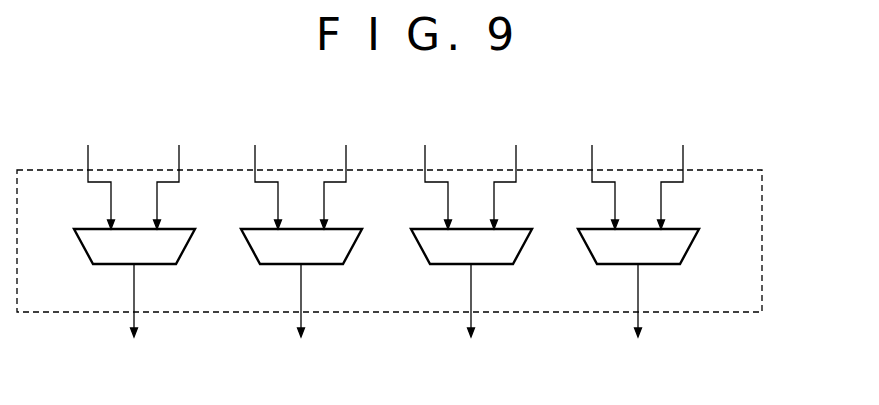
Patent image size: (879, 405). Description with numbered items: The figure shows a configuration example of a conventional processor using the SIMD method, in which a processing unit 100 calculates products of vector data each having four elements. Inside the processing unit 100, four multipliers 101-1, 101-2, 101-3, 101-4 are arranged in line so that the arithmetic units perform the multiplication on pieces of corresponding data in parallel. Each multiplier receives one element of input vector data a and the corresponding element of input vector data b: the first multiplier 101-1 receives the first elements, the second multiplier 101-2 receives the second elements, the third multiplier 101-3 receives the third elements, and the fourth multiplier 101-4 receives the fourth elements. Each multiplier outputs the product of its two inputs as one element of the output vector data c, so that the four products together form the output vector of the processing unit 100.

The processing unit 100 is at (712, 168).
The multiplier 101-1 is at (186, 250).
The multiplier 101-2 is at (353, 250).
The multiplier 101-3 is at (523, 250).
The multiplier 101-4 is at (690, 250).